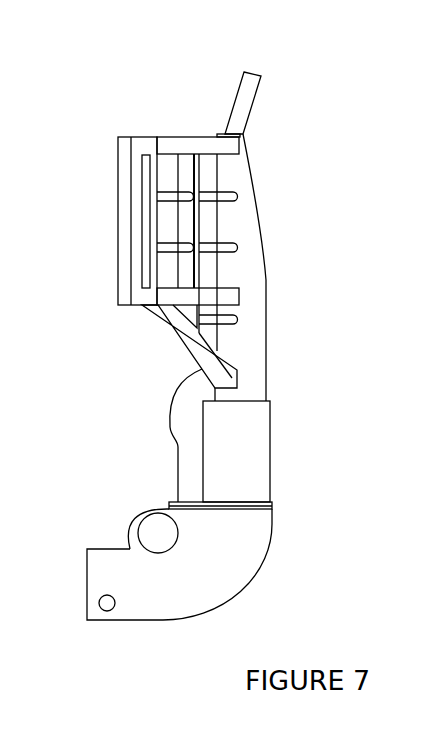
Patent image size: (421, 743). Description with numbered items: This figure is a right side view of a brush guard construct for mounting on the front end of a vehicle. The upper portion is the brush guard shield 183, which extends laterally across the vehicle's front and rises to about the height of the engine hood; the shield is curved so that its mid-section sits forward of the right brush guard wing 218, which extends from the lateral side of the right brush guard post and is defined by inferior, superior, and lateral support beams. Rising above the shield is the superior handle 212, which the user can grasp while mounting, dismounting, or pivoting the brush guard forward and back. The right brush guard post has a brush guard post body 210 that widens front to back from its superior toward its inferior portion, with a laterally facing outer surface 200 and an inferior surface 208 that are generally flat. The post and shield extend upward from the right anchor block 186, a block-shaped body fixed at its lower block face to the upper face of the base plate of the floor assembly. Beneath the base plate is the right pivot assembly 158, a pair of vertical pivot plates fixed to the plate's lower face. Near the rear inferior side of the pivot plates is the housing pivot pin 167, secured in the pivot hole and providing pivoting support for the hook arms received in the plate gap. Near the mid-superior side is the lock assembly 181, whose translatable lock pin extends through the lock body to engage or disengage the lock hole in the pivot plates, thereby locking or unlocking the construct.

The right pivot assembly 158 is at (240, 592).
The housing pivot pin 167 is at (99, 615).
The lock assembly 181 is at (130, 542).
The brush guard shield 183 is at (166, 112).
The right anchor block 186 is at (277, 467).
The outer surface 200 is at (250, 346).
The inferior surface 208 is at (256, 401).
The brush guard post body 210 is at (270, 262).
The superior handle 212 is at (262, 70).
The right brush guard wing 218 is at (108, 189).